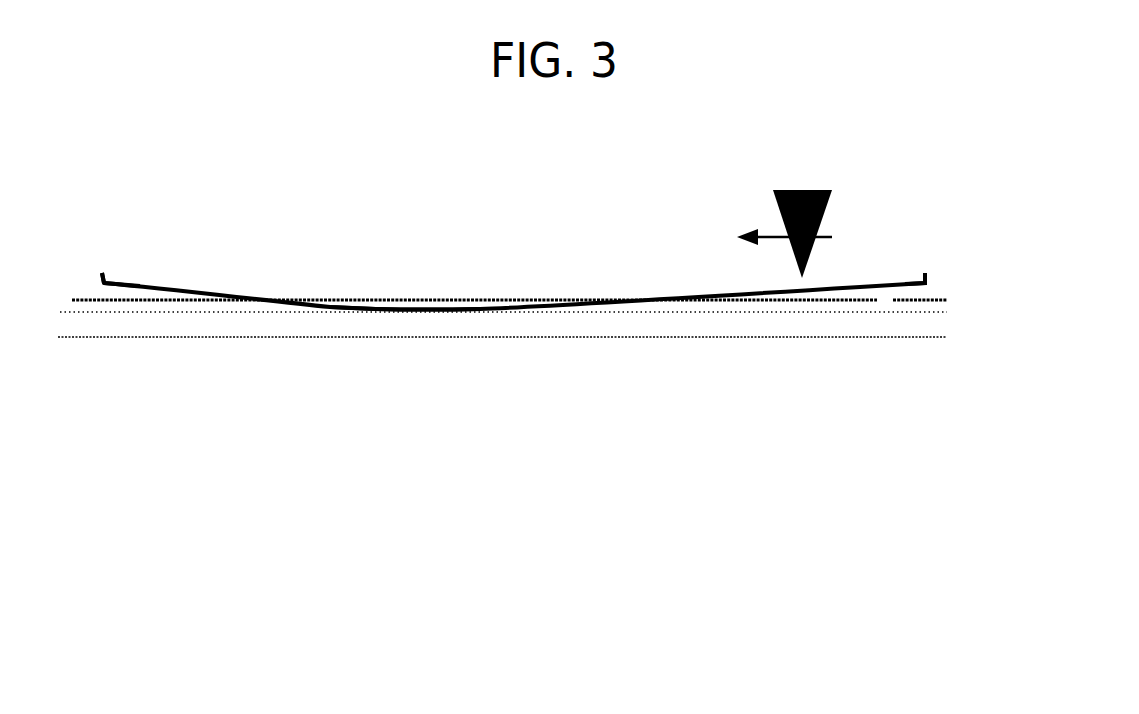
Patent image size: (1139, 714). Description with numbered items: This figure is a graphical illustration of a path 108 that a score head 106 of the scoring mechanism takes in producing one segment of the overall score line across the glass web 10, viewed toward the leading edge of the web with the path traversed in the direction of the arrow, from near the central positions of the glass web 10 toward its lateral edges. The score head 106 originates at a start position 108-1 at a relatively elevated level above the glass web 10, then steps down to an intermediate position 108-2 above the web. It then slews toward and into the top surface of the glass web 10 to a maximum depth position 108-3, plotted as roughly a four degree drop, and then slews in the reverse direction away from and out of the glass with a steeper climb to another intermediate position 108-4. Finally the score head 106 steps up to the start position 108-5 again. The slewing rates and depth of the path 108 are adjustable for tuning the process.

The glass web 10 is at (888, 323).
The score head 106 is at (826, 222).
The path 108 is at (312, 262).
The start position 108-1 is at (932, 267).
The intermediate position 108-2 is at (935, 283).
The maximum depth position 108-3 is at (477, 323).
The intermediate position 108-4 is at (117, 278).
The start position 108-5 is at (103, 263).